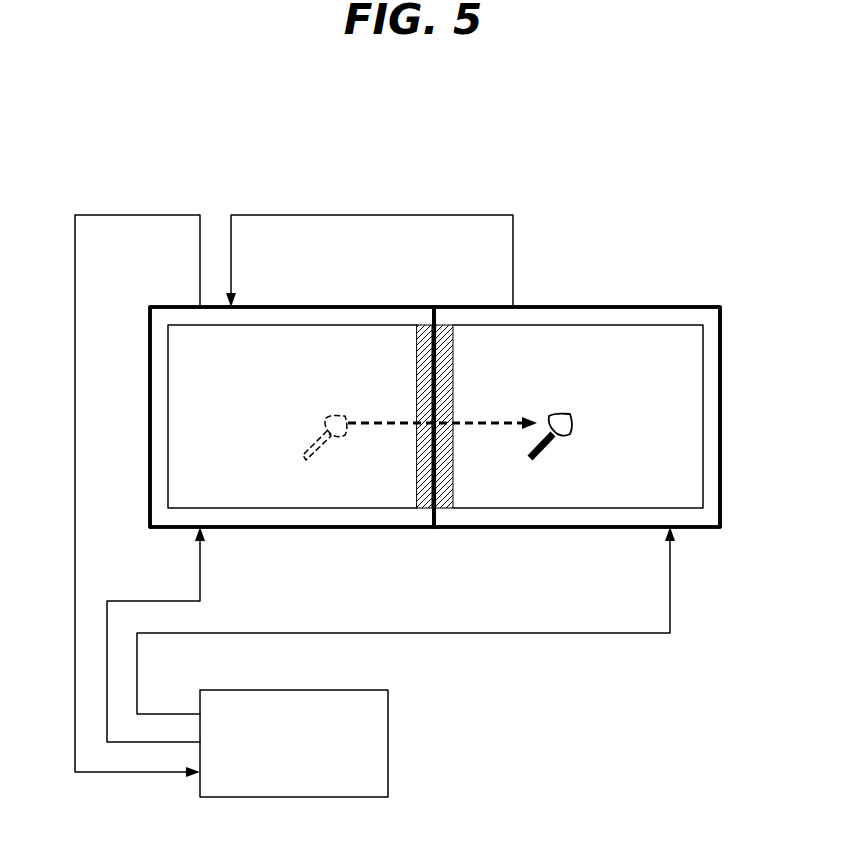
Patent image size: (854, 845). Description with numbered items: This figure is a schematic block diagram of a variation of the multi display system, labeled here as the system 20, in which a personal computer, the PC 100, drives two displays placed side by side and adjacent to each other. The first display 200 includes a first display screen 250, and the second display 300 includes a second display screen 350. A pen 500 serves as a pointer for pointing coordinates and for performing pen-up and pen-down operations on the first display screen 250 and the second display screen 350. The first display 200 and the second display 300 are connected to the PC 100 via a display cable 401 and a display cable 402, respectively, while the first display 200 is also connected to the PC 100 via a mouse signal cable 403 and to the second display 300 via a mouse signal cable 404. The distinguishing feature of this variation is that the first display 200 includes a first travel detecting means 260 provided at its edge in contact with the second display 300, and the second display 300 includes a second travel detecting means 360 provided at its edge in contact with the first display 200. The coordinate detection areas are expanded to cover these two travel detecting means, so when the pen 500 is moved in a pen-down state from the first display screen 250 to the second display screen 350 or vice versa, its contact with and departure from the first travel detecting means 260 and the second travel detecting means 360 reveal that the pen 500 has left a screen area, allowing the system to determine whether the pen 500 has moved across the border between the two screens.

The multi-display system 20 is at (543, 115).
The personal computer 100 is at (388, 742).
The first display 200 is at (388, 307).
The first display screen 250 is at (296, 325).
The first travel detecting means 260 is at (418, 508).
The second display 300 is at (647, 307).
The second display screen 350 is at (581, 325).
The second travel detecting means 360 is at (453, 508).
The display cable 401 is at (163, 601).
The display cable 402 is at (592, 633).
The mouse signal cable 403 is at (137, 215).
The mouse signal cable 404 is at (360, 215).
The pen 500 is at (553, 447).